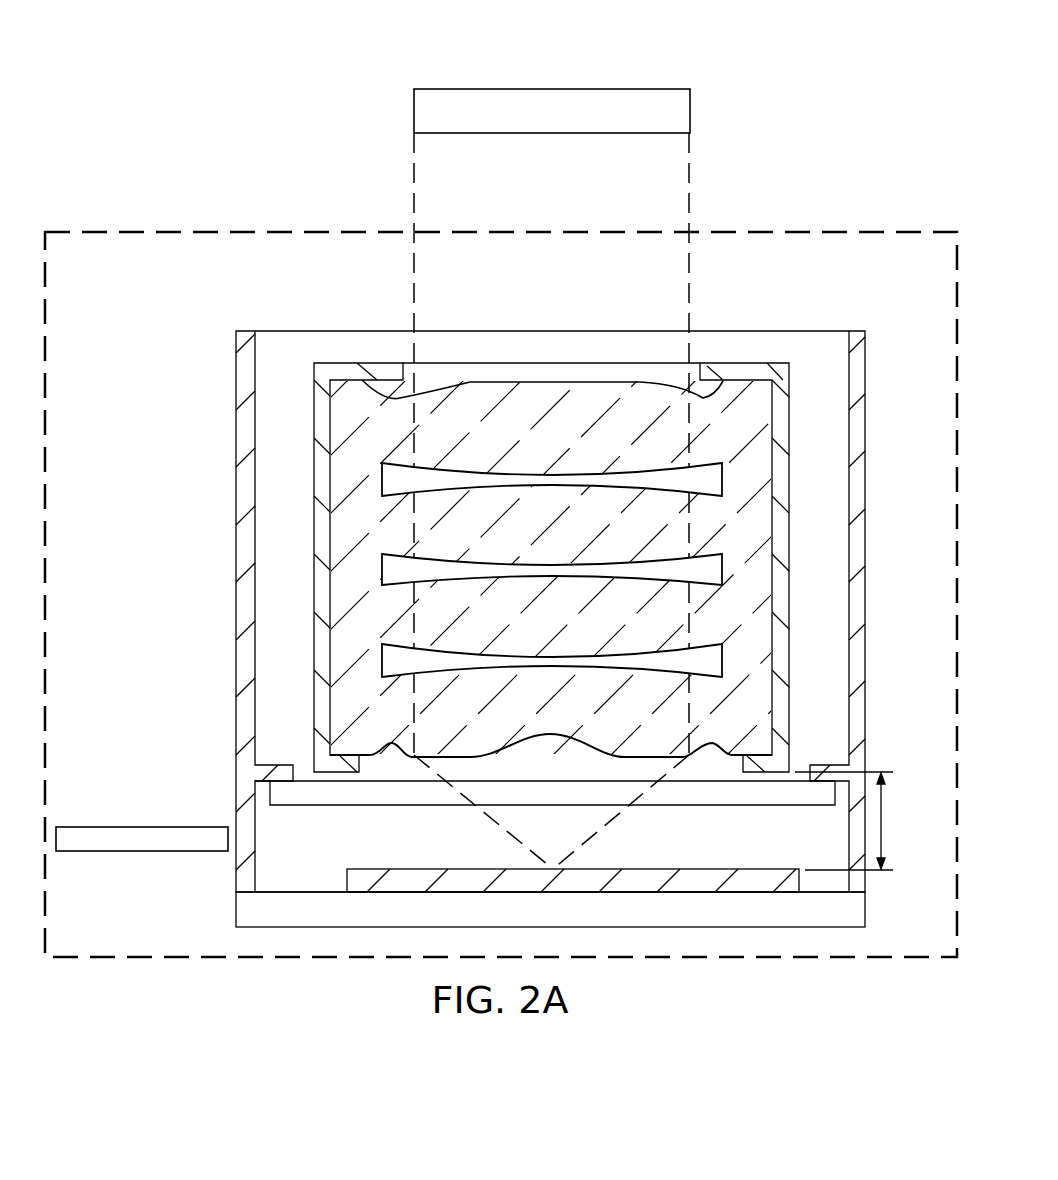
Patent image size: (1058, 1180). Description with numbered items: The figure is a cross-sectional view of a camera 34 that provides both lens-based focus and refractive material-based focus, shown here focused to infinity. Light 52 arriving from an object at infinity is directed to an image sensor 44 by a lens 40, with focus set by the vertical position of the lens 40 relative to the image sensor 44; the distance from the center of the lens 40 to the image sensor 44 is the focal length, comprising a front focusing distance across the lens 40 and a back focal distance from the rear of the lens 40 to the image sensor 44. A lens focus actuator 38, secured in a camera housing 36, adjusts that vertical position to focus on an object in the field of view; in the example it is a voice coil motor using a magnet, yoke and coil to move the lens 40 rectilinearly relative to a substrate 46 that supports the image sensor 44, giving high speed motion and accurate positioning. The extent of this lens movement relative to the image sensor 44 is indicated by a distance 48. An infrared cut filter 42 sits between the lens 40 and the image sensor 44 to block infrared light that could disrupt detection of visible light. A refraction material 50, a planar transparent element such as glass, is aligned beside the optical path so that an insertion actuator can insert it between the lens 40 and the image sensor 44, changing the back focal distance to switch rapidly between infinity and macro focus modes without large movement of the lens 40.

The camera 34 is at (357, 70).
The camera housing 36 is at (240, 538).
The lens focus actuator 38 is at (348, 372).
The lens 40 is at (548, 396).
The filter 42 is at (396, 798).
The image sensor 44 is at (706, 878).
The substrate 46 is at (246, 908).
The distance 48 is at (883, 821).
The refraction material 50 is at (138, 853).
The light 52 is at (690, 168).